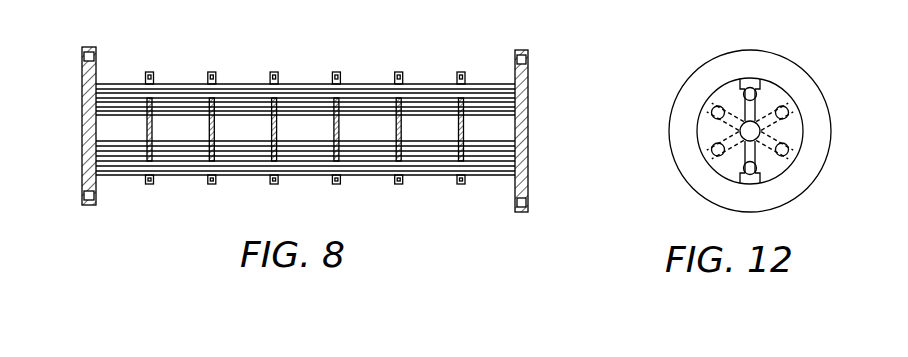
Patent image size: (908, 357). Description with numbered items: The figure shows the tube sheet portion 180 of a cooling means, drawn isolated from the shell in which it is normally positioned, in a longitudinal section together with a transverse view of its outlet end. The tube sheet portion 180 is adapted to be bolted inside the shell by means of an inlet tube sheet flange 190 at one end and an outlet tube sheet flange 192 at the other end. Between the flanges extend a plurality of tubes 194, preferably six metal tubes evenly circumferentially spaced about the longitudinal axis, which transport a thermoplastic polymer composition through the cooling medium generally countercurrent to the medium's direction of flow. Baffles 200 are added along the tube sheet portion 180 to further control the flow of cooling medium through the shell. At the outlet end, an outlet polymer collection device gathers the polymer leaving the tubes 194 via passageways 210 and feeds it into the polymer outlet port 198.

In FIG. 8, the tube sheet portion 180 is at (312, 66).
In FIG. 8, the inlet tube sheet flange 190 is at (98, 70).
In FIG. 8, the outlet tube sheet flange 192 is at (528, 72).
In FIG. 12, the outlet tube sheet flange 192 is at (697, 88).
In FIG. 8, the tubes 194 is at (177, 84).
In FIG. 12, the polymer outlet port 198 is at (757, 125).
In FIG. 8, the baffles 200 is at (273, 83).
In FIG. 12, the passageways 210 is at (772, 125).